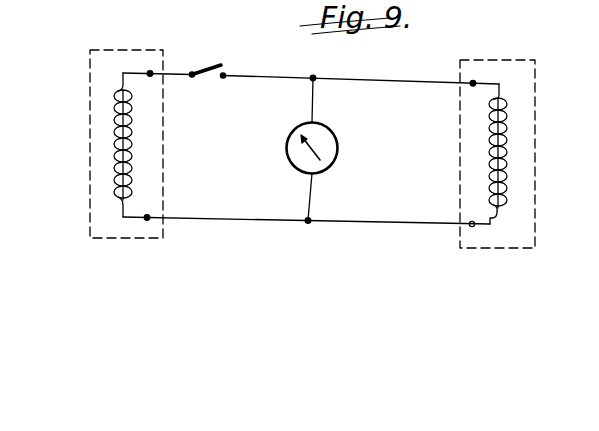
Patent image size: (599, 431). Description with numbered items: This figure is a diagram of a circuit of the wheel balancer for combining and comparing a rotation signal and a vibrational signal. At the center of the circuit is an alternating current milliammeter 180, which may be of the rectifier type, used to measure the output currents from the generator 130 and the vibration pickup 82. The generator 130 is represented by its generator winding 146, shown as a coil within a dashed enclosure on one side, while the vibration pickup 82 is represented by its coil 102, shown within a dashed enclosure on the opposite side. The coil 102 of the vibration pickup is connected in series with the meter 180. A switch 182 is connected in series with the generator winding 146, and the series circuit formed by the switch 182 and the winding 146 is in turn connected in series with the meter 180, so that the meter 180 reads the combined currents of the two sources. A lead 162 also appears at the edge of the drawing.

The lead 162 is at (17, 1).
The generator 130 is at (88, 163).
The generator winding 146 is at (116, 131).
The switch 182 is at (210, 64).
The alternating current milliammeter 180 is at (337, 157).
The vibration pickup 82 is at (533, 190).
The coil of the vibration pickup 102 is at (506, 158).